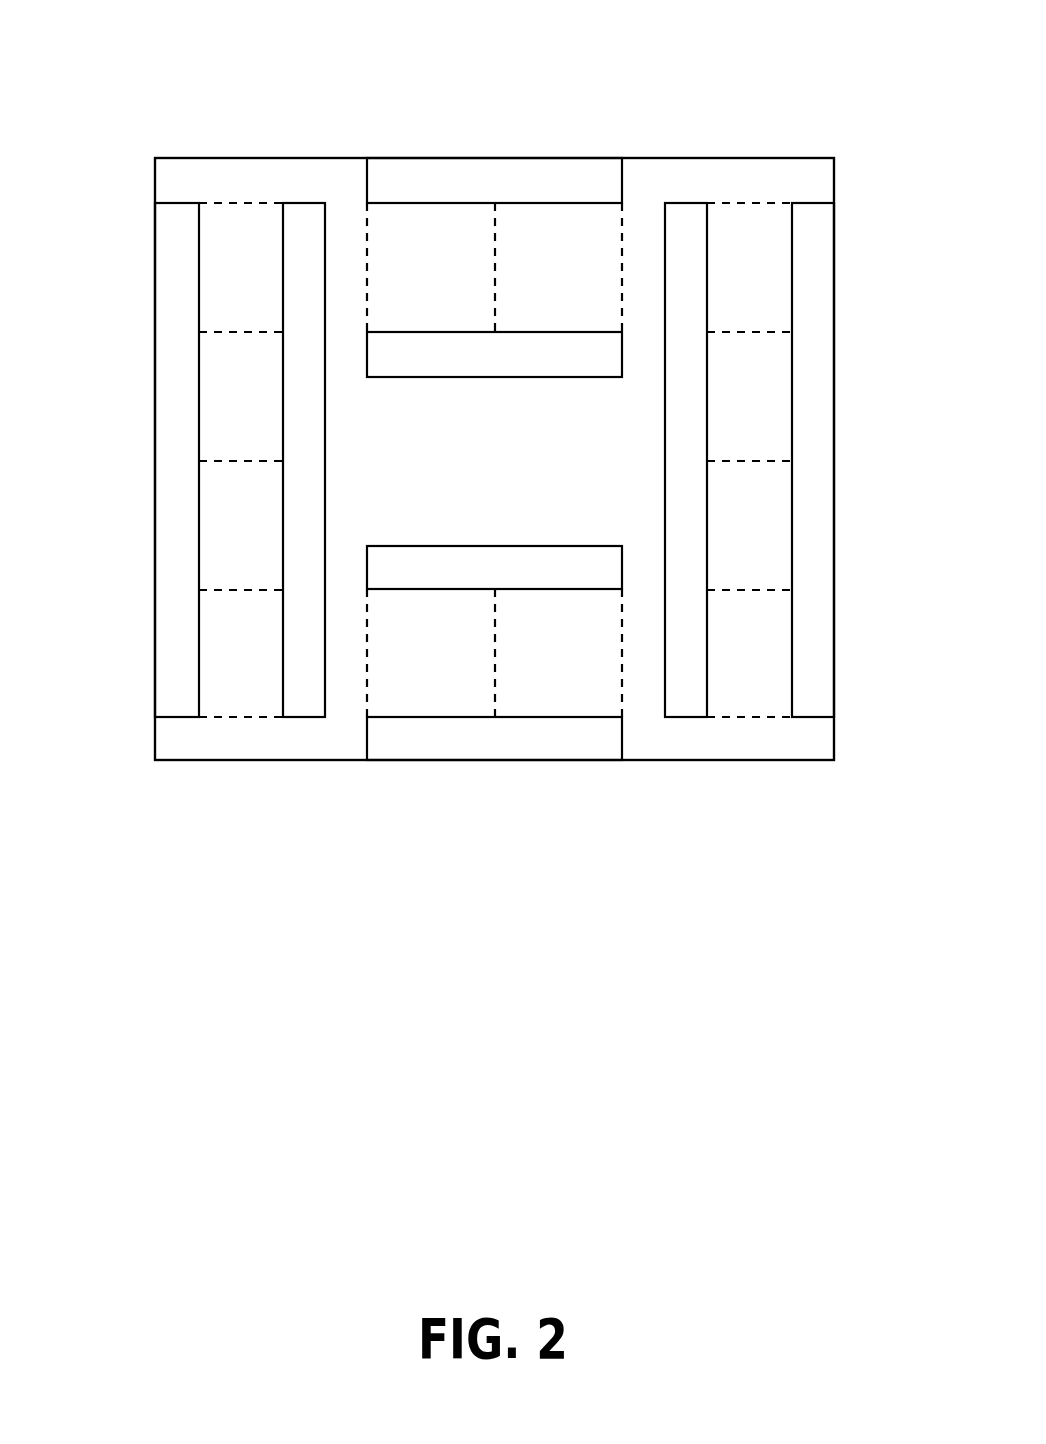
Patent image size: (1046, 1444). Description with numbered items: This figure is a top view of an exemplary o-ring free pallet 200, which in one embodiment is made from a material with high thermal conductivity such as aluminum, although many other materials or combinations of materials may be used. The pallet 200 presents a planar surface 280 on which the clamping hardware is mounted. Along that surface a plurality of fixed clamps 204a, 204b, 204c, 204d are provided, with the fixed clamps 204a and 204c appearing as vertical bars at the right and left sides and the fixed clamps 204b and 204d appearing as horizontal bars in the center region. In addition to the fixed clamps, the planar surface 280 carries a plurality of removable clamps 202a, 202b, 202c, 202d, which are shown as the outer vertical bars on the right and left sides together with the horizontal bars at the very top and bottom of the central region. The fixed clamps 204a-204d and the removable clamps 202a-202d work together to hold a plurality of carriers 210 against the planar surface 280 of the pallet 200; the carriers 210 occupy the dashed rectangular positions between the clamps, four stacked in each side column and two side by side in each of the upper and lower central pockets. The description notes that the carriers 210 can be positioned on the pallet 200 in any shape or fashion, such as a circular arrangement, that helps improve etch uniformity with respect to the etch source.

The o-ring free pallet 200 is at (521, 33).
The planar surface 280 is at (213, 157).
The removable clamp 202a is at (813, 463).
The removable clamp 202b is at (526, 753).
The removable clamp 202c is at (178, 461).
The removable clamp 202d is at (526, 196).
The fixed clamp 204a is at (686, 675).
The fixed clamp 204b is at (526, 583).
The fixed clamp 204c is at (303, 247).
The fixed clamp 204d is at (526, 366).
The carrier 210 is at (263, 282).